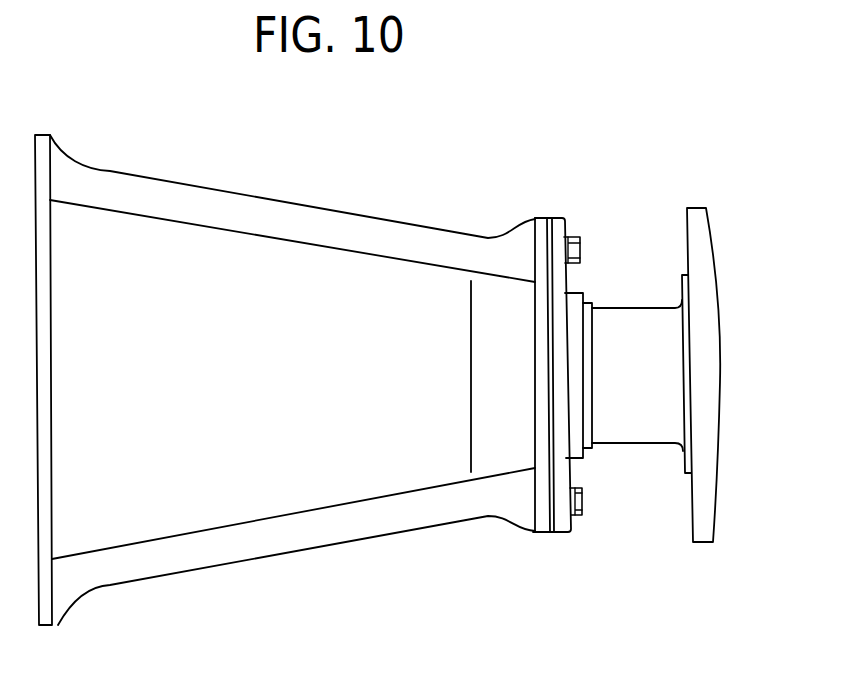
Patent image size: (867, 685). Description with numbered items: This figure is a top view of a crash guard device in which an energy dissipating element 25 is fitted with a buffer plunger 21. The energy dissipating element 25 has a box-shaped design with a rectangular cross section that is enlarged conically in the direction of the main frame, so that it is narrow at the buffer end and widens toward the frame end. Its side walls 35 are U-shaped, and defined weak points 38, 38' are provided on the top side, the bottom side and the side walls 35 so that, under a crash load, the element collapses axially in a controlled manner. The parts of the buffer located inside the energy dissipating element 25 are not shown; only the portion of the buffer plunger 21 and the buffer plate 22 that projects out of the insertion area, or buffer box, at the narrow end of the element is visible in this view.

The buffer plunger 21 is at (665, 357).
The buffer plate 22 is at (698, 291).
The energy dissipating element 25 is at (390, 567).
The side walls 35 is at (308, 205).
The weak point 38 is at (444, 431).
The weak point 38' is at (541, 401).